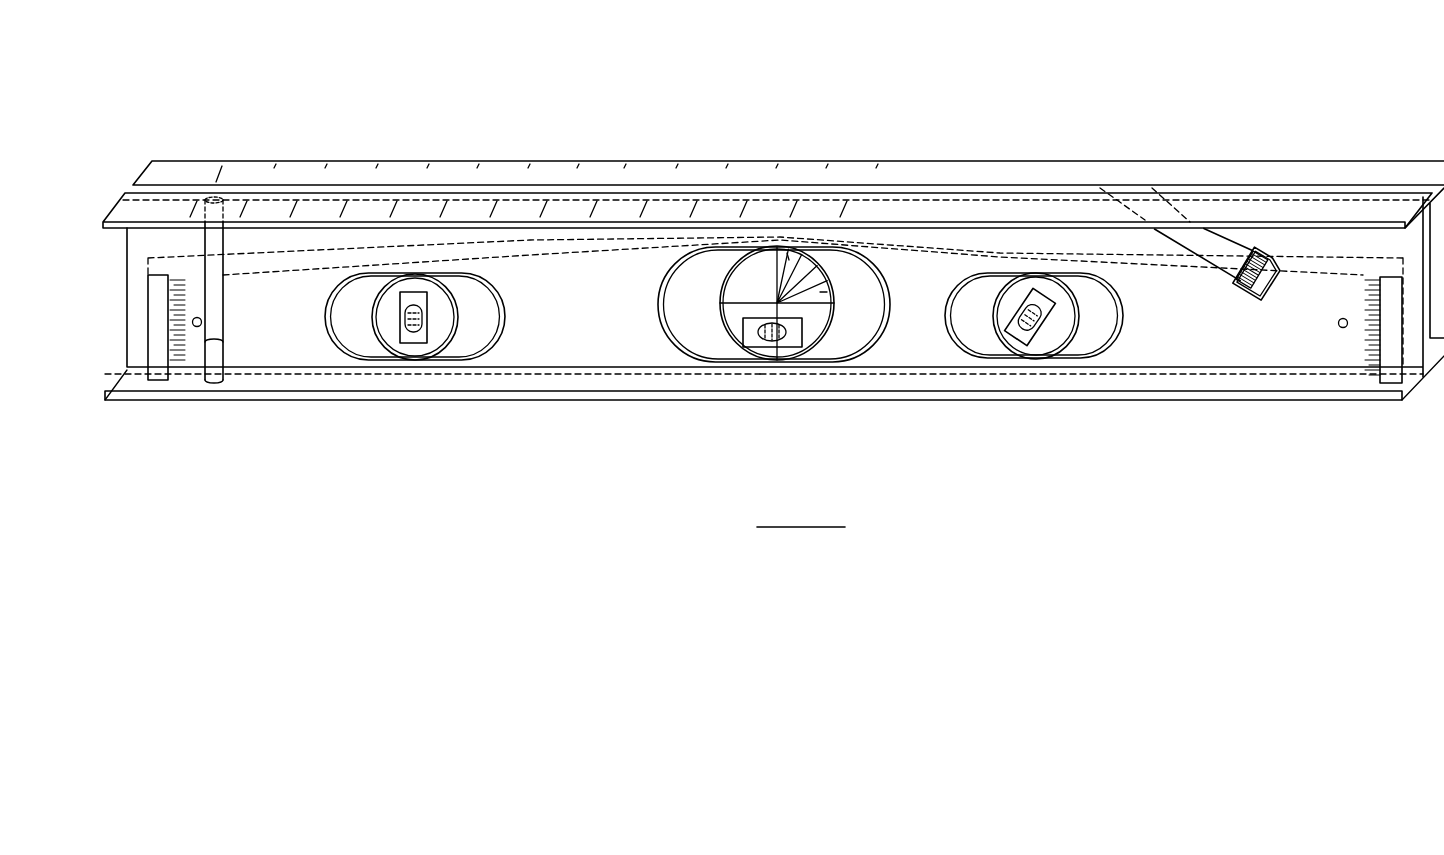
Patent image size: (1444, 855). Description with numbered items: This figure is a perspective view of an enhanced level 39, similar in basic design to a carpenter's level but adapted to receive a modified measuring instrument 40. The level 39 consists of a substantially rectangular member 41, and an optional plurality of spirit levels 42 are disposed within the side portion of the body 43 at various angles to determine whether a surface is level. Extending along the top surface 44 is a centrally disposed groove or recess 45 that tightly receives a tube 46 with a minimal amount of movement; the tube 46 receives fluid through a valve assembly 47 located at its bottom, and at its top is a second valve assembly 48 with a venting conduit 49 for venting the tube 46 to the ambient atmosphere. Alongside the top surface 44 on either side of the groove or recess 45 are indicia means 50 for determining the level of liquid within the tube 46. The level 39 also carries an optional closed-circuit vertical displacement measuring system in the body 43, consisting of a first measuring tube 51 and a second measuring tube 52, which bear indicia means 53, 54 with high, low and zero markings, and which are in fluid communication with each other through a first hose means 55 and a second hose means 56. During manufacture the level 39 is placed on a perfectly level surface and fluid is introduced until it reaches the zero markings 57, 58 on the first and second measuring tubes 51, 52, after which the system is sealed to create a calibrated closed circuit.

The level 39 is at (842, 101).
The modified measuring instrument 40 is at (1165, 243).
The rectangular member 41 is at (333, 393).
The spirit levels 42 is at (427, 321).
The body 43 is at (573, 315).
The top surface 44 is at (1012, 178).
The groove or recess 45 is at (1424, 190).
The tube 46 is at (1217, 248).
The valve assembly 47 is at (213, 364).
The second valve assembly 48 is at (1272, 318).
The venting conduit 49 is at (1272, 280).
The indicia means 50 is at (637, 193).
The first measuring tube 51 is at (157, 352).
The second measuring tube 52 is at (1393, 355).
The indicia means 53 is at (177, 294).
The indicia means 54 is at (1373, 353).
The first hose means 55 is at (238, 262).
The second hose means 56 is at (262, 383).
The zero marking 57 is at (196, 318).
The zero marking 58 is at (1228, 378).